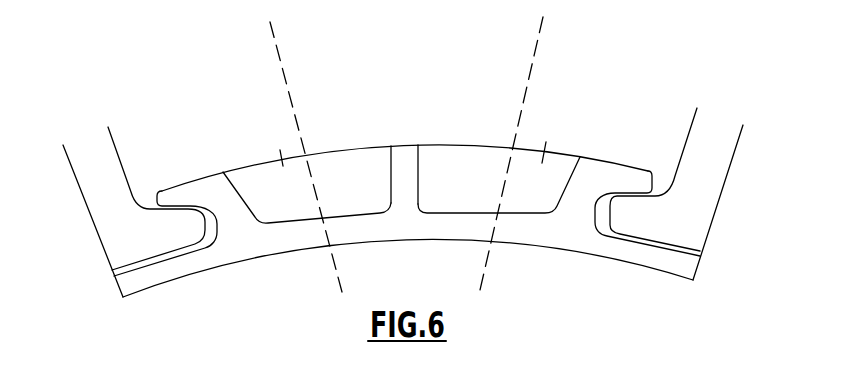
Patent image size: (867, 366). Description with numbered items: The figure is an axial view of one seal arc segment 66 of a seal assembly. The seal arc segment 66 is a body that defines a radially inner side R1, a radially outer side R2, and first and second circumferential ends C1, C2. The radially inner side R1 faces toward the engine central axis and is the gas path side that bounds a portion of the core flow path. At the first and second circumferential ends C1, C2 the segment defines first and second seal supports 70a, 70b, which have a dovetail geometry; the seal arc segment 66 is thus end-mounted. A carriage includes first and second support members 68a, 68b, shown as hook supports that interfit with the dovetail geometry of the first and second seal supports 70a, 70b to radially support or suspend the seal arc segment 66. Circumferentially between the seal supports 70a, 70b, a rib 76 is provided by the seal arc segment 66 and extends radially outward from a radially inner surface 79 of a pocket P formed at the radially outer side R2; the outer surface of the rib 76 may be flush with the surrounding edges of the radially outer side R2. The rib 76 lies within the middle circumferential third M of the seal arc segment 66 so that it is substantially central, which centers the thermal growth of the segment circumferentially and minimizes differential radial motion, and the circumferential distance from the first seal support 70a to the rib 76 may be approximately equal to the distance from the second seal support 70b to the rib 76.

The seal arc segment 66 is at (198, 296).
The first support member 68a is at (108, 216).
The second support member 68b is at (700, 198).
The first seal support 70a is at (192, 186).
The second seal support 70b is at (620, 173).
The rib 76 is at (403, 156).
The radially inner surface 79 is at (303, 220).
The pocket P is at (280, 150).
The middle circumferential third M is at (535, 43).
The radially inner side R1 is at (310, 249).
The radially outer side R2 is at (340, 147).
The first circumferential end C1 is at (103, 281).
The second circumferential end C2 is at (714, 266).